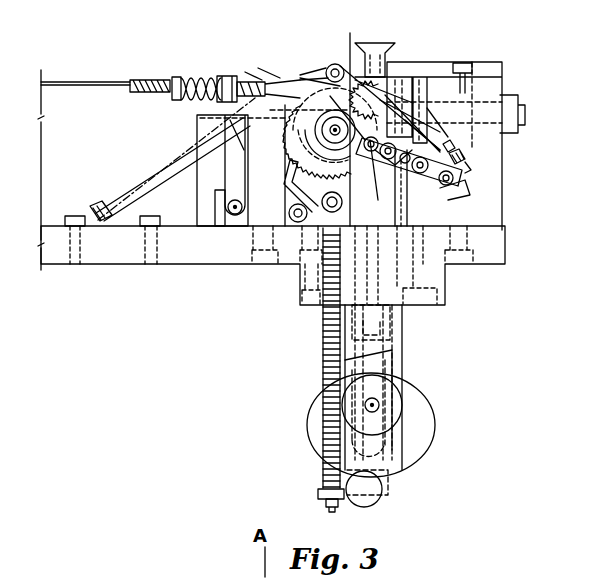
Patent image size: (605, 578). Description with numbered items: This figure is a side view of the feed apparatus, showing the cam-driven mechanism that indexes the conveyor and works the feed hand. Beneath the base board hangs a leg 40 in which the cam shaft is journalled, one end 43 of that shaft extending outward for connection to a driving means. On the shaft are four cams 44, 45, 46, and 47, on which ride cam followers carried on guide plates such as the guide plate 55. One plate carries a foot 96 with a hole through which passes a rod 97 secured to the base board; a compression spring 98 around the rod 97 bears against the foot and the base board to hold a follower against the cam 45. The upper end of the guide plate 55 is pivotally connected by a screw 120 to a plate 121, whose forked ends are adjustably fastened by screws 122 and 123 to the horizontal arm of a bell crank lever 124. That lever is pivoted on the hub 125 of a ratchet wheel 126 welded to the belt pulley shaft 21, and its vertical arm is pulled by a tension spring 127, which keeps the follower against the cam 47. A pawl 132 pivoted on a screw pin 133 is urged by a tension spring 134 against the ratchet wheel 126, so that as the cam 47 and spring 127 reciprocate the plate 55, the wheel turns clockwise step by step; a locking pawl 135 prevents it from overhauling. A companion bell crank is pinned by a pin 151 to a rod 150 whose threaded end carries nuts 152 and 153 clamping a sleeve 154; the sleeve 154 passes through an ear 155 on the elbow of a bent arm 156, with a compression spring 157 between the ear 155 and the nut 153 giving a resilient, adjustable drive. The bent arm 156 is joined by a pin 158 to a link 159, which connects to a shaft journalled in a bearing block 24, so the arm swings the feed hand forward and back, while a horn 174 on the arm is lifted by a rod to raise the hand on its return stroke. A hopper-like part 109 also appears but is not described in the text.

The belt pulley shaft 21 is at (326, 148).
The bearing block 24 is at (215, 226).
The leg 40 is at (405, 345).
The end of cam shaft 43 is at (379, 410).
The cam 44 is at (427, 390).
The cam 45 is at (397, 477).
The cam 46 is at (400, 440).
The cam 47 is at (308, 403).
The guide plate 55 is at (400, 322).
The foot 96 is at (318, 493).
The rod 97 is at (328, 511).
The compression spring 98 is at (322, 455).
The hopper 109 is at (378, 92).
The screw 120 is at (408, 175).
The plate 121 is at (415, 178).
The screw 122 is at (458, 152).
The screw 123 is at (413, 150).
The bell crank lever 124 is at (398, 142).
The hub 125 is at (288, 78).
The ratchet wheel 126 is at (290, 168).
The tension spring 127 is at (180, 158).
The pawl 132 is at (450, 140).
The screw pin 133 is at (428, 139).
The tension spring 134 is at (468, 164).
The locking pawl 135 is at (305, 228).
The rod 150 is at (242, 80).
The pin 151 is at (356, 121).
The nut 152 is at (230, 77).
The nut 153 is at (175, 92).
The sleeve 154 is at (178, 78).
The ear 155 is at (218, 113).
The bent arm 156 is at (293, 80).
The compression spring 157 is at (203, 78).
The pin 158 is at (262, 142).
The link 159 is at (222, 197).
The horn 174 is at (407, 147).